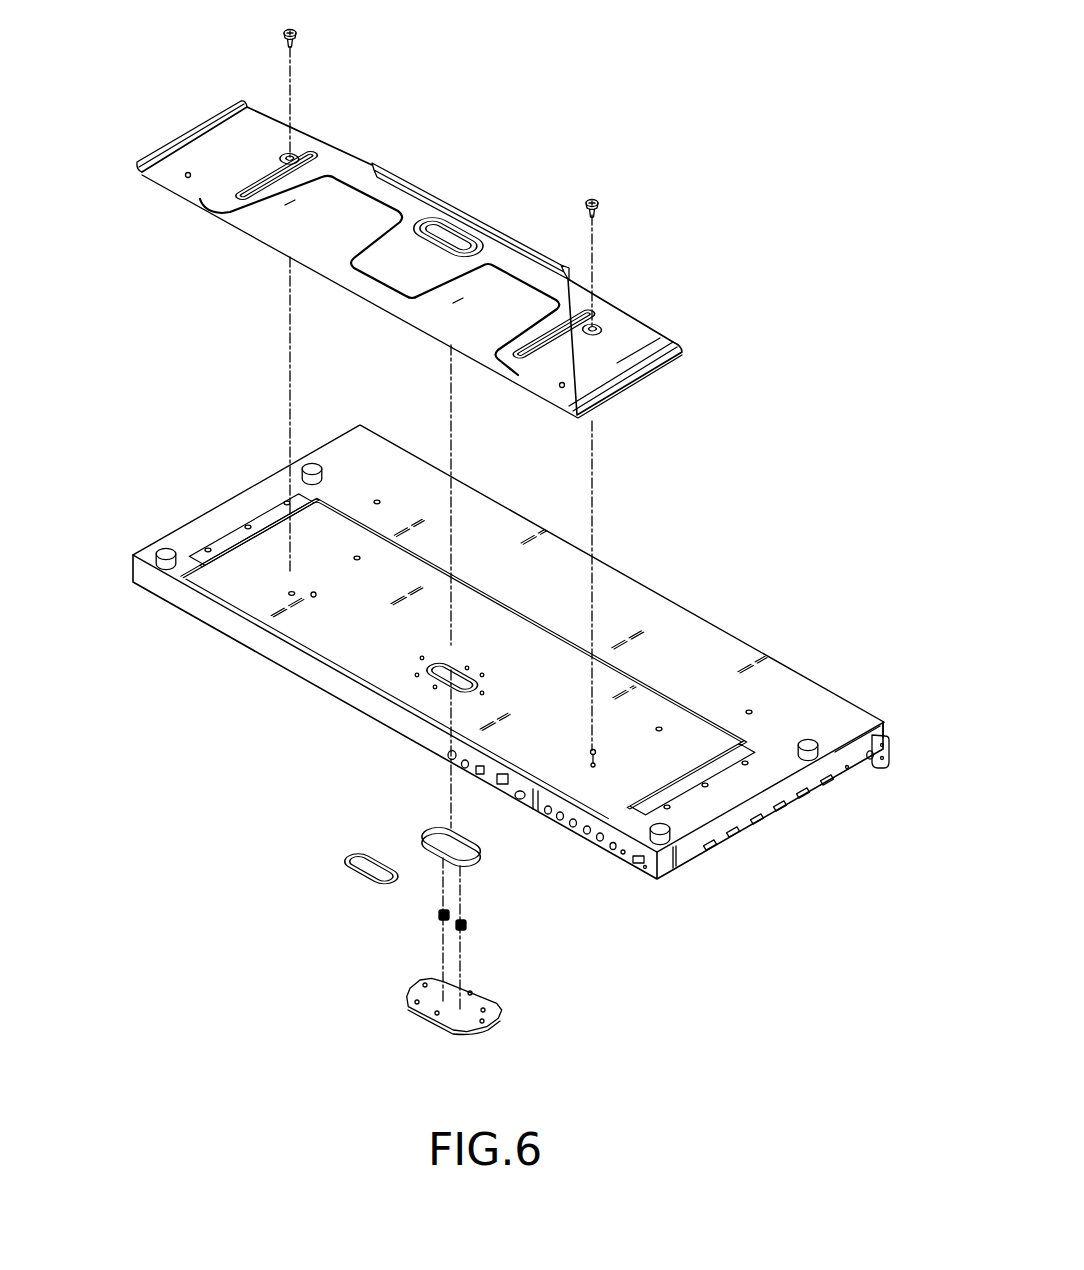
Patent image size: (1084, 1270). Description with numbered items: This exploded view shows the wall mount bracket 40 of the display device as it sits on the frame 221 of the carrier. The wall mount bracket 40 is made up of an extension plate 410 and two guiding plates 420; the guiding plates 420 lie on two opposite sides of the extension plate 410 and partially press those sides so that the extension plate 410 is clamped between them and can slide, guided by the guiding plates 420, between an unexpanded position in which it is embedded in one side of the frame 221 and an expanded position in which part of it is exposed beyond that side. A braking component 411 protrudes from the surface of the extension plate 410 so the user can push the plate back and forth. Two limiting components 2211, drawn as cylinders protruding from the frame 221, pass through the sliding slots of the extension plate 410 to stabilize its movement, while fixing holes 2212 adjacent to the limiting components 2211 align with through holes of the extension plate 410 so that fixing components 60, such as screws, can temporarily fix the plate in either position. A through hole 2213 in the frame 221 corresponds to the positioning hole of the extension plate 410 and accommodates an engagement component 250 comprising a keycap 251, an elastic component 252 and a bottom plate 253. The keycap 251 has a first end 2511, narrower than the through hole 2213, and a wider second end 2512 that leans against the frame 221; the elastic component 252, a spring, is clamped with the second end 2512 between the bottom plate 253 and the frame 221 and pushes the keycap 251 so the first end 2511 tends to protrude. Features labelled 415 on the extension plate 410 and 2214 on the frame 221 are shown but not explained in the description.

The wall mount bracket 40 is at (404, 209).
The fixing component 60 is at (292, 31).
The frame 221 is at (511, 648).
The engagement component 250 is at (405, 924).
The keycap 251 is at (438, 848).
The elastic component 252 is at (437, 915).
The bottom plate 253 is at (416, 943).
The extension plate 410 is at (404, 259).
The braking component 411 is at (521, 242).
The tab 415 is at (187, 177).
The guiding plate 420 is at (266, 526).
The limiting component 2211 is at (316, 593).
The fixing hole 2212 is at (290, 594).
The through hole 2213 is at (457, 668).
The hole 2214 is at (378, 500).
The first end 2511 is at (470, 850).
The second end 2512 is at (480, 864).